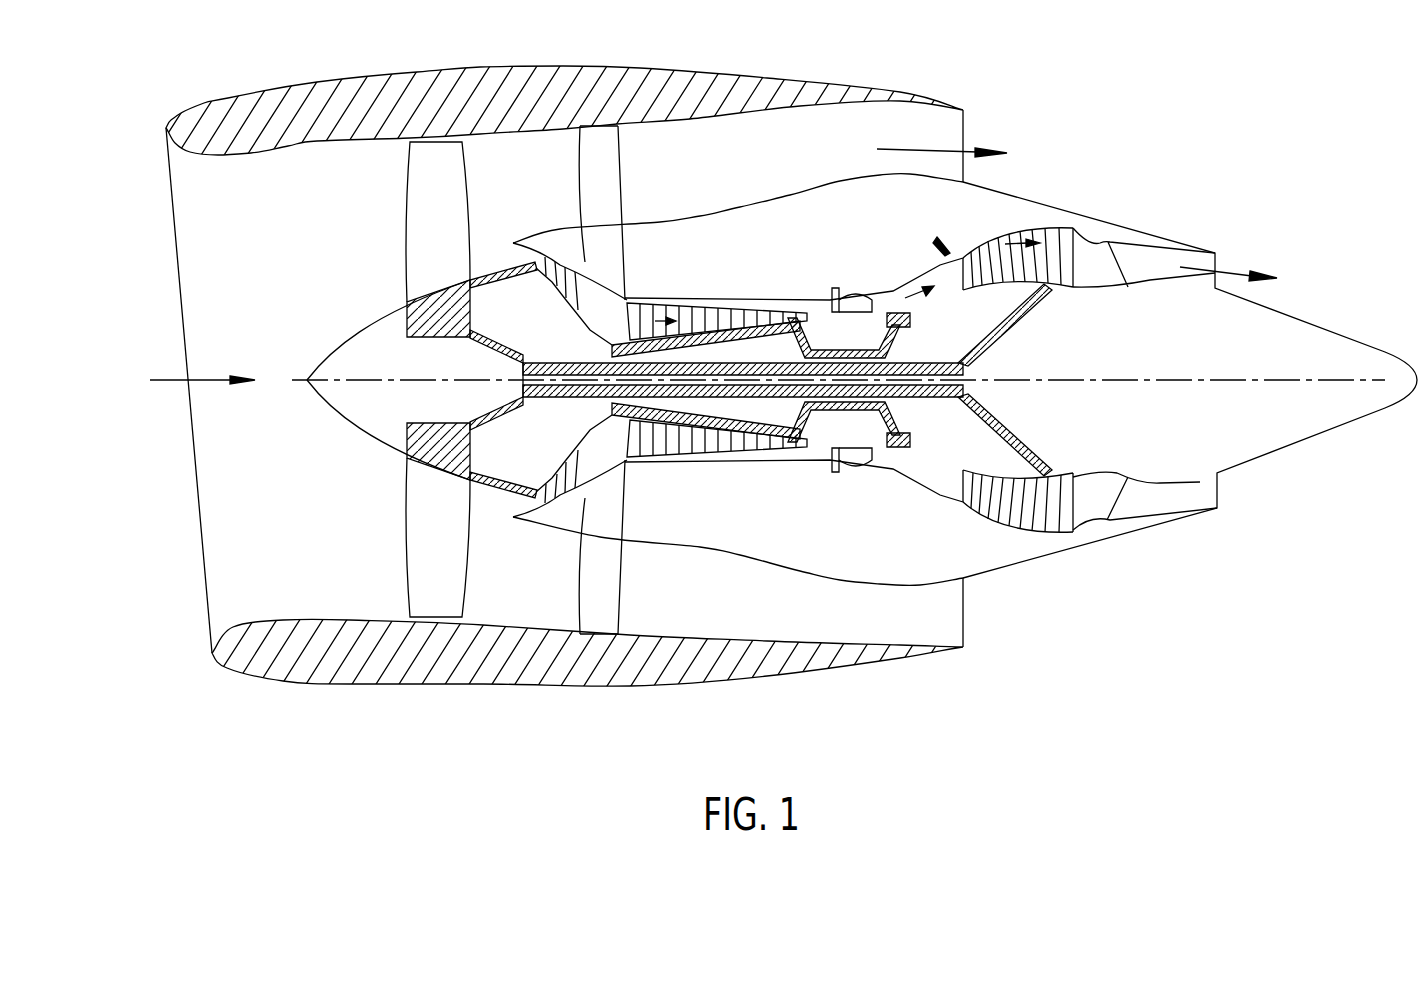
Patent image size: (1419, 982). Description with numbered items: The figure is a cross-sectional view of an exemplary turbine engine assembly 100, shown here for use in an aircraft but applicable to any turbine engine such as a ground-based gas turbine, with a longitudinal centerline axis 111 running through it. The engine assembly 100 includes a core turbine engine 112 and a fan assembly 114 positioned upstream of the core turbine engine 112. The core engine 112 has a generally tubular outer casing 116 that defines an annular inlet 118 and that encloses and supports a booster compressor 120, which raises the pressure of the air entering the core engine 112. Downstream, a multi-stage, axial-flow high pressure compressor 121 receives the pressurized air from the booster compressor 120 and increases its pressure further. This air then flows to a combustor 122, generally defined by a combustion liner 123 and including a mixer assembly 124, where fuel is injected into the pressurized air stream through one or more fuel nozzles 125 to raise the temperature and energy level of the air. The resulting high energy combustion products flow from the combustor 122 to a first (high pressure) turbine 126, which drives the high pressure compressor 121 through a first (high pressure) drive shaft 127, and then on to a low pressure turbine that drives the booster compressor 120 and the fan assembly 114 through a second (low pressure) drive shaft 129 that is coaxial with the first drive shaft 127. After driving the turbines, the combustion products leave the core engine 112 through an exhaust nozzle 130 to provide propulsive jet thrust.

The turbine engine assembly 100 is at (1125, 88).
The centerline axis 111 is at (1166, 378).
The core turbine engine 112 is at (803, 258).
The fan assembly 114 is at (372, 262).
The outer casing 116 is at (800, 572).
The annular inlet 118 is at (505, 503).
The booster compressor 120 is at (587, 456).
The high pressure compressor 121 is at (658, 452).
The combustor 122 is at (833, 462).
The combustion liner 123 is at (852, 470).
The mixer assembly 124 is at (858, 465).
The fuel nozzle 125 is at (866, 465).
The first (high pressure) turbine 126 is at (915, 462).
The first (high pressure) drive shaft 127 is at (893, 338).
The second (low pressure) drive shaft 129 is at (578, 363).
The exhaust nozzle 130 is at (1218, 264).